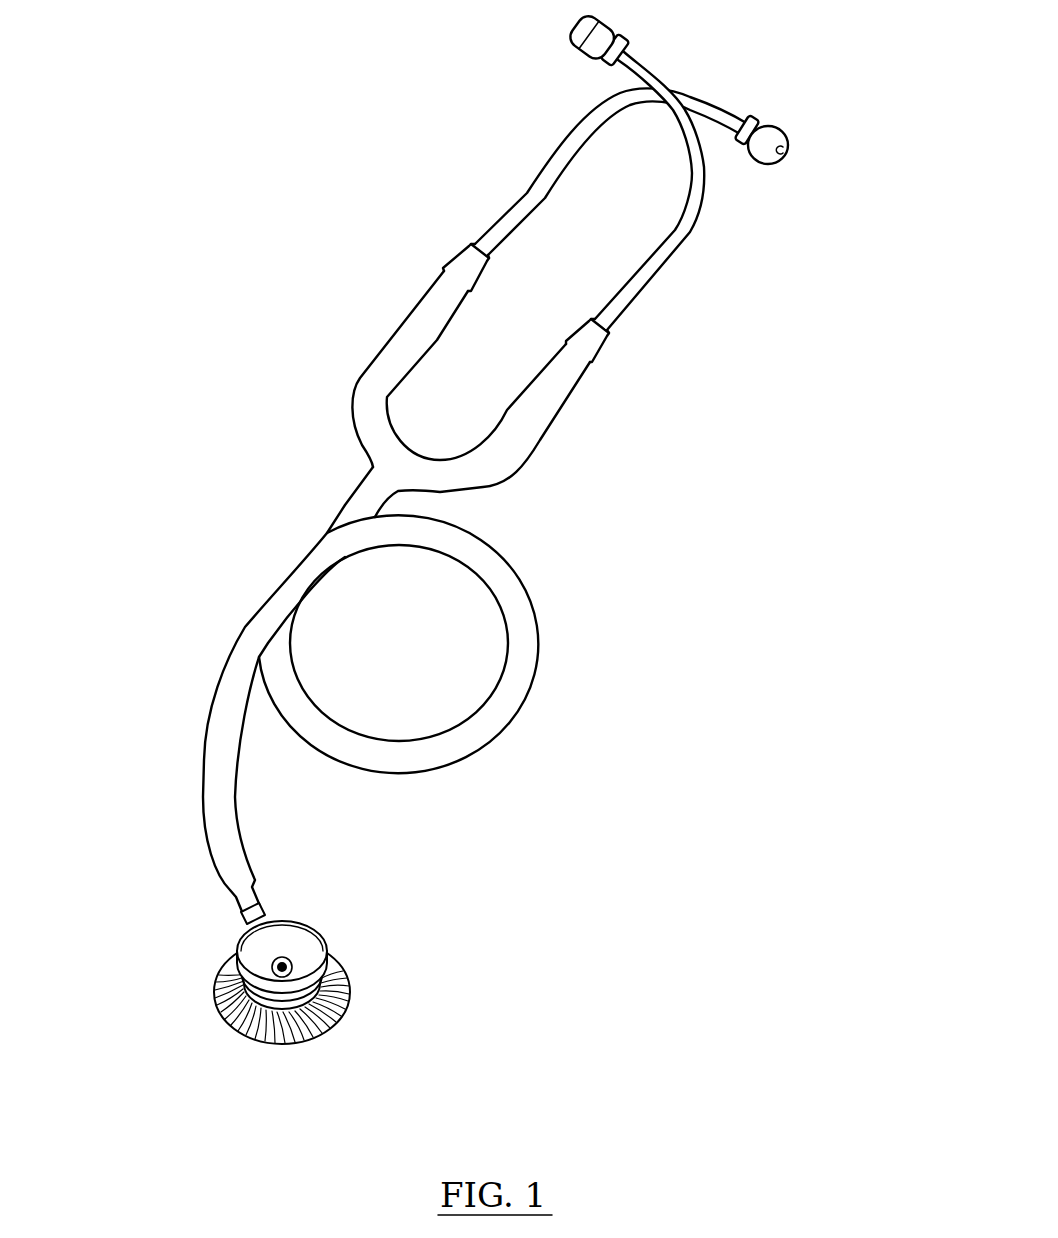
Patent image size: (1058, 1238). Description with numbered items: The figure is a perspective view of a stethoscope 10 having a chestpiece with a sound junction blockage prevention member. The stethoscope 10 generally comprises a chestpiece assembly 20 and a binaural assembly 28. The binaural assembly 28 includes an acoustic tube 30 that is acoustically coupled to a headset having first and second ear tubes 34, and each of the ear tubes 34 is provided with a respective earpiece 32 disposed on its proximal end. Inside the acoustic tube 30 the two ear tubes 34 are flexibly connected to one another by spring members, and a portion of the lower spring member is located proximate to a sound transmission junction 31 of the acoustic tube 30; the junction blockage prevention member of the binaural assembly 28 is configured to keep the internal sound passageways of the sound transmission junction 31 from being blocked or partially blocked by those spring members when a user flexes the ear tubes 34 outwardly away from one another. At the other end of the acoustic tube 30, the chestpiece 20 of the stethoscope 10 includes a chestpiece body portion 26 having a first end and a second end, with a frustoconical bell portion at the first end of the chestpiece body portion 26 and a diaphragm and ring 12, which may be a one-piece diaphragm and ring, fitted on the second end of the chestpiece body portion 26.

The stethoscope 10 is at (120, 1012).
The diaphragm and ring 12 is at (340, 980).
The chestpiece assembly 20 is at (190, 953).
The chestpiece body portion 26 is at (280, 1003).
The binaural assembly 28 is at (823, 167).
The acoustic tube 30 is at (495, 572).
The sound transmission junction 31 is at (395, 467).
The earpiece 32 is at (787, 133).
The ear tube 34 is at (530, 193).